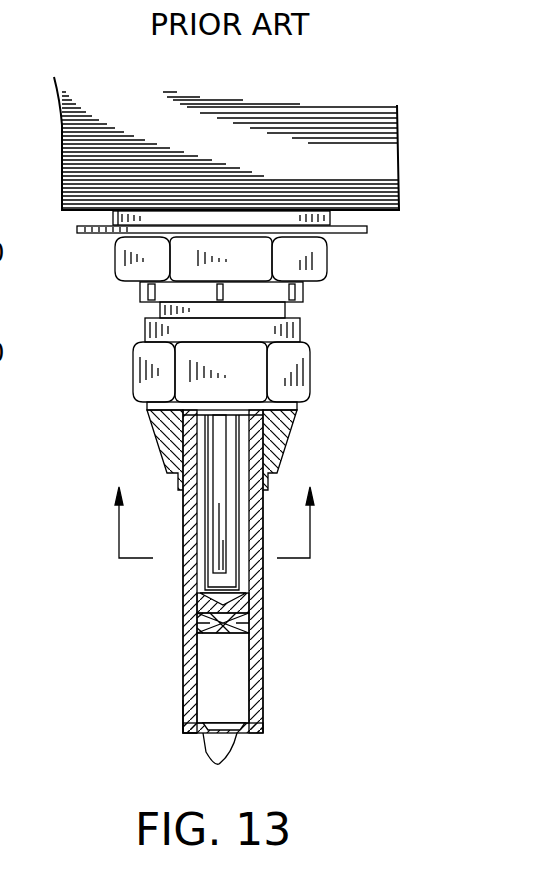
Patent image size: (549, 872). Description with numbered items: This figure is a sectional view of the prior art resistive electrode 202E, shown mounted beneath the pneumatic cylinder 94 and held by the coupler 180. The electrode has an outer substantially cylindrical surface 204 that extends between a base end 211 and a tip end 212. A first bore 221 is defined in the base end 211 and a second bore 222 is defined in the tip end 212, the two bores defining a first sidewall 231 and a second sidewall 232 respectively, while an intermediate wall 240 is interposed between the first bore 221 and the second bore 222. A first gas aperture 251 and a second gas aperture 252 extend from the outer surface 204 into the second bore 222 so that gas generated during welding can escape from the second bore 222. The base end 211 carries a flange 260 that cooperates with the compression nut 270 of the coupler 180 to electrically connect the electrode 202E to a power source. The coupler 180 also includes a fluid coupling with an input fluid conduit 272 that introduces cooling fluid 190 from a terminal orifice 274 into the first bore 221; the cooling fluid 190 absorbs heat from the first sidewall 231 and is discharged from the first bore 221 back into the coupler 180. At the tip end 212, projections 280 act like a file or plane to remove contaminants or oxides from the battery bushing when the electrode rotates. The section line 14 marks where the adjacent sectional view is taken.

The pneumatic cylinder 94 is at (60, 126).
The coupler 180 is at (342, 295).
The compression nut 270 is at (315, 358).
The base end 211 is at (300, 404).
The flange 260 is at (200, 413).
The input fluid conduit 272 is at (220, 447).
The section line 14 is at (216, 507).
The resistive electrode 202E is at (263, 512).
The first bore 221 is at (263, 550).
The first sidewall 231 is at (183, 537).
The cooling fluid 190 is at (197, 575).
The outer substantially cylindrical surface 204 is at (265, 588).
The intermediate wall 240 is at (265, 604).
The first gas aperture 251 is at (250, 623).
The terminal orifice 274 is at (195, 600).
The second gas aperture 252 is at (185, 662).
The second bore 222 is at (247, 677).
The tip end 212 is at (260, 733).
The second sidewall 232 is at (183, 700).
The projections 280 is at (215, 764).